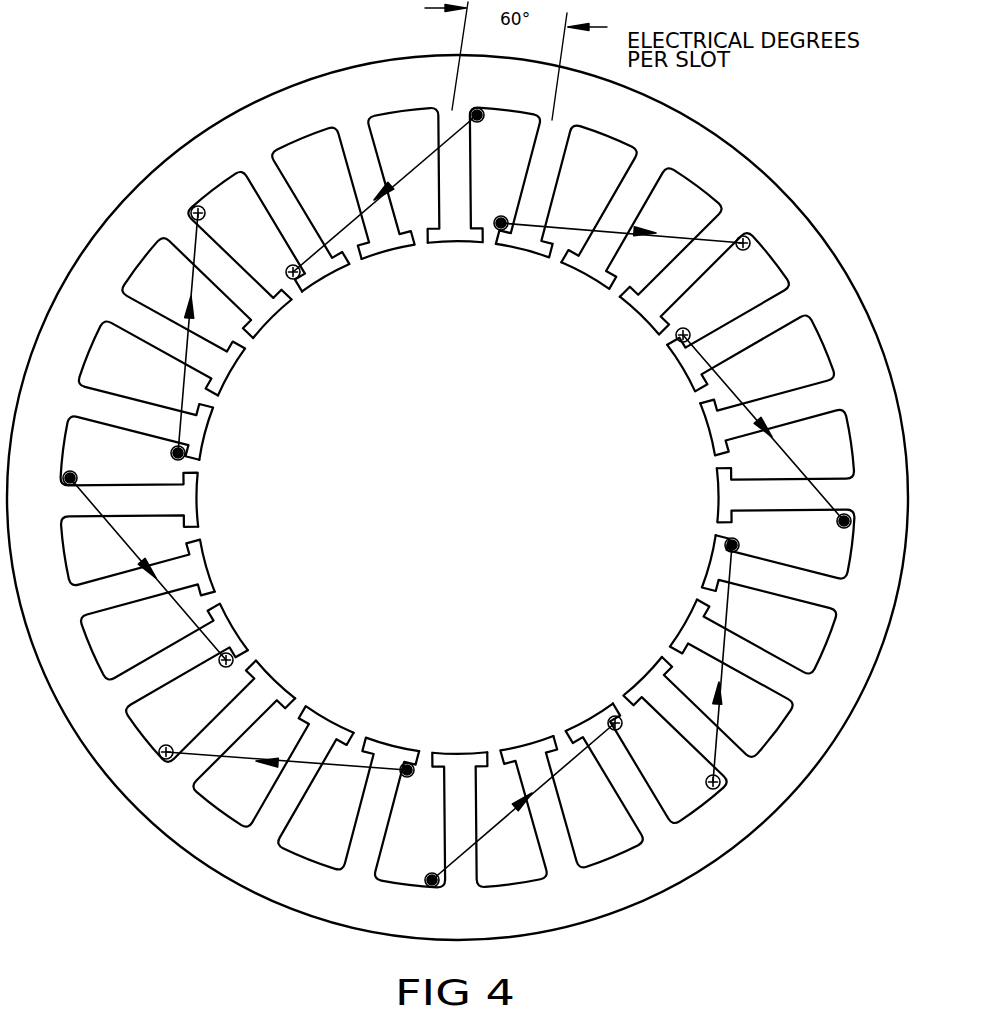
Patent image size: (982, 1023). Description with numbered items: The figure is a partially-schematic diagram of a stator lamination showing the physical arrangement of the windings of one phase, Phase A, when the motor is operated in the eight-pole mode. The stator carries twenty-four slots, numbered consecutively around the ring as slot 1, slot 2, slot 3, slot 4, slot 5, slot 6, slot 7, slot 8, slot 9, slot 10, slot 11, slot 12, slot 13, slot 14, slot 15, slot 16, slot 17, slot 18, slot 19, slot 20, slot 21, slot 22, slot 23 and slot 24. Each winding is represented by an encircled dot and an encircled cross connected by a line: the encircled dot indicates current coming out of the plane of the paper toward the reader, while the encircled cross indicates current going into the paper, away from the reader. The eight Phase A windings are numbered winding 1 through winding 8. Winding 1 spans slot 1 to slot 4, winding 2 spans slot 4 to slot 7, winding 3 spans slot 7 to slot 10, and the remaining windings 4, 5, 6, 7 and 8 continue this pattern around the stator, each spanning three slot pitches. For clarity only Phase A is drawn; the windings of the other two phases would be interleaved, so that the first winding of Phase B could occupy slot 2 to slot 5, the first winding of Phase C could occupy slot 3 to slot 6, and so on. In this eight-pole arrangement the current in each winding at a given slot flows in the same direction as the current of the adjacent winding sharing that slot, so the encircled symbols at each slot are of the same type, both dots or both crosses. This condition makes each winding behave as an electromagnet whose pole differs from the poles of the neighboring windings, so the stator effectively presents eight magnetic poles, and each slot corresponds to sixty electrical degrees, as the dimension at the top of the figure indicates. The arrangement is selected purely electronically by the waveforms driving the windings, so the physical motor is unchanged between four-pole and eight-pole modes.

The slot 1 / winding 1 is at (589, 165).
The slot 2 / winding 2 is at (673, 308).
The slot 3 / winding 3 is at (651, 458).
The slot 4 / winding 4 is at (619, 540).
The slot 5 / winding 5 is at (510, 532).
The slot 6 / winding 6 is at (473, 523).
The slot 7 / winding 7 is at (528, 394).
The slot 8 / winding 8 is at (580, 397).
The slot 9 is at (736, 688).
The slot 10 is at (676, 752).
The slot 11 is at (601, 799).
The slot 12 is at (517, 825).
The slot 13 is at (429, 830).
The slot 14 is at (342, 811).
The slot 15 is at (264, 771).
The slot 16 is at (198, 713).
The slot 17 is at (150, 639).
The slot 18 is at (123, 556).
The slot 19 is at (119, 469).
The slot 20 is at (138, 384).
The slot 21 is at (179, 307).
The slot 22 is at (238, 243).
The slot 23 is at (312, 195).
The slot 24 is at (397, 169).